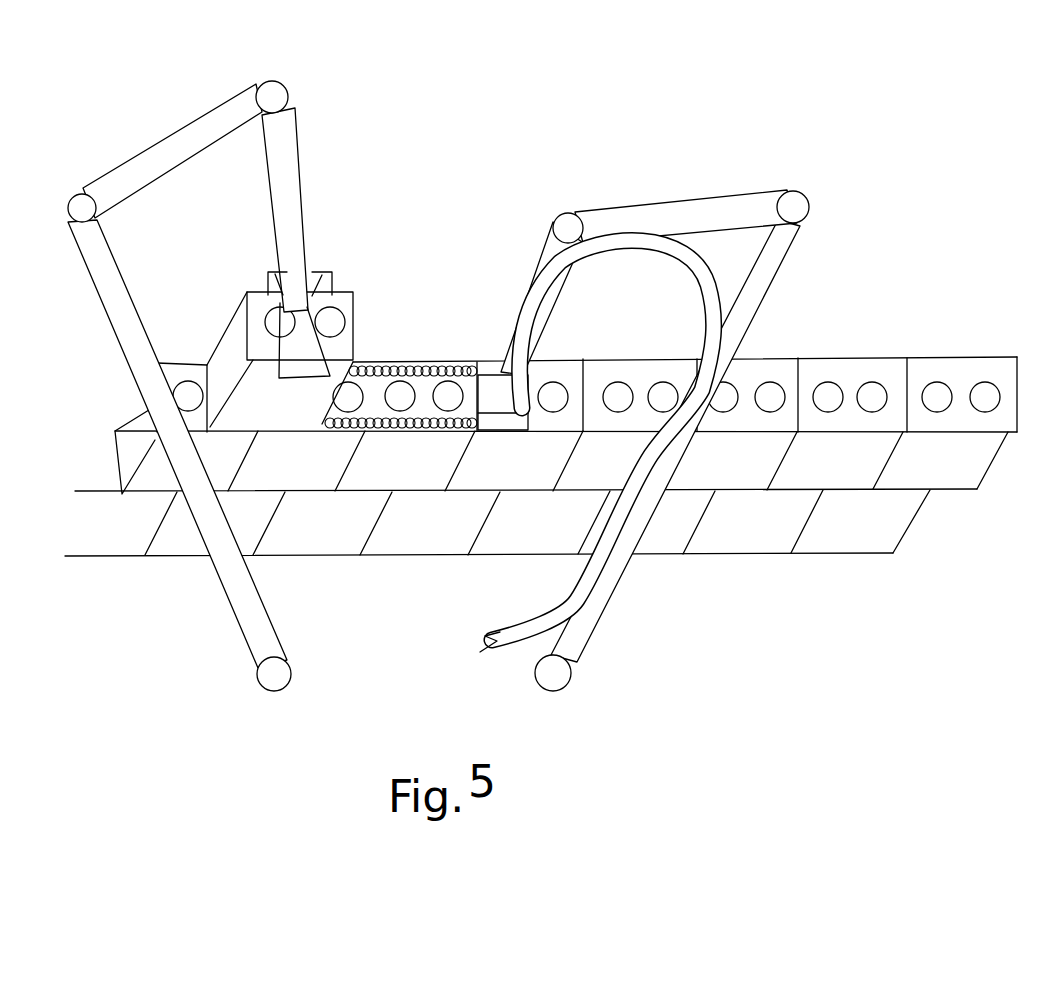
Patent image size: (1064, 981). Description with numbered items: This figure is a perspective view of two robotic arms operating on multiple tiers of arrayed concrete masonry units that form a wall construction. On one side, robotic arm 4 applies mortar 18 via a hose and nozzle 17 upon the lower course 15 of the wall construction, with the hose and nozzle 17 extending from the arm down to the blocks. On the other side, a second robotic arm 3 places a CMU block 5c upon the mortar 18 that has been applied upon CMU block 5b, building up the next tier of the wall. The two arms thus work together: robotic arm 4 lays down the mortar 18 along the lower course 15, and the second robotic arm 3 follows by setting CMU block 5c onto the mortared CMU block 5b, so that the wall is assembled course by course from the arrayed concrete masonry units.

The second robotic arm 3 is at (158, 158).
The robotic arm 4 is at (692, 200).
The CMU block 5b is at (326, 481).
The CMU block 5c is at (342, 538).
The lower course 15 is at (742, 478).
The hose and nozzle 17 is at (580, 267).
The mortar 18 is at (400, 367).